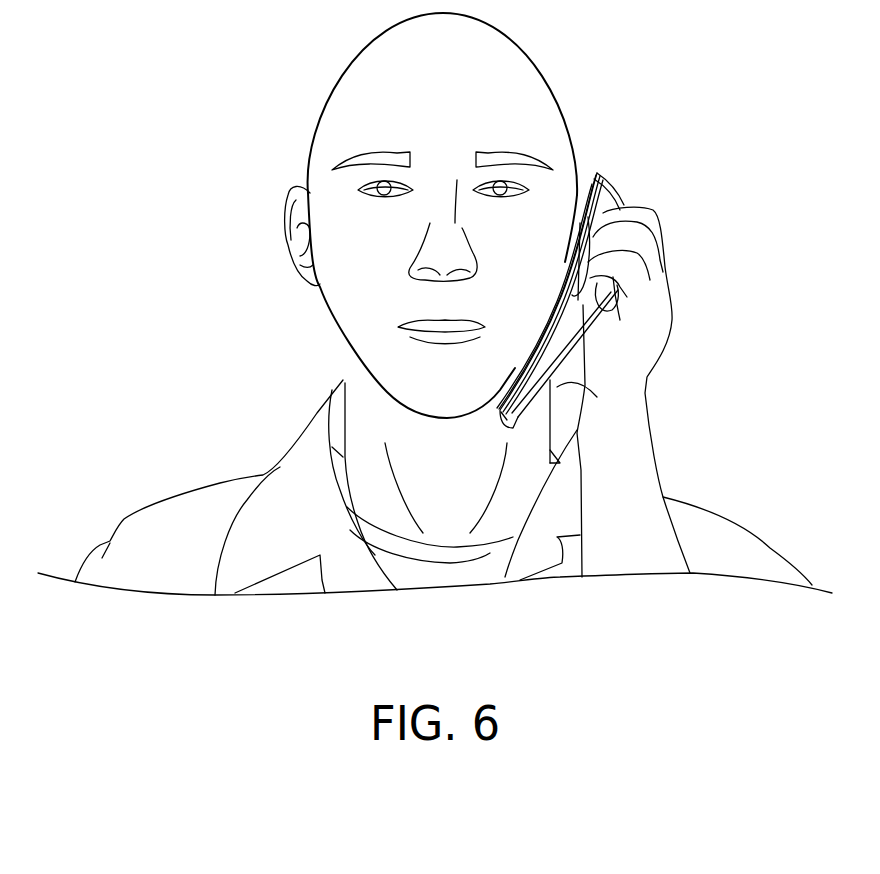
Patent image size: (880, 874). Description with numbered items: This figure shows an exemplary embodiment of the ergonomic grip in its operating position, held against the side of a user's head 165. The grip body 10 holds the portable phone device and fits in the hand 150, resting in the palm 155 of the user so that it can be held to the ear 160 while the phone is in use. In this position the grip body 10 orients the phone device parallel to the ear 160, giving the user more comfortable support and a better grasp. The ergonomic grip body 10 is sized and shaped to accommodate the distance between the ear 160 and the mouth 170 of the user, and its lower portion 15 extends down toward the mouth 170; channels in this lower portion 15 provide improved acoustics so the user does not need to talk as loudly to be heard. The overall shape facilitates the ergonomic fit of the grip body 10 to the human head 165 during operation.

The grip body 10 is at (490, 361).
The lower portion 15 is at (495, 372).
The hand 150 is at (700, 322).
The palm 155 is at (581, 367).
The ear 160 is at (581, 178).
The head 165 is at (404, 211).
The mouth 170 is at (390, 325).